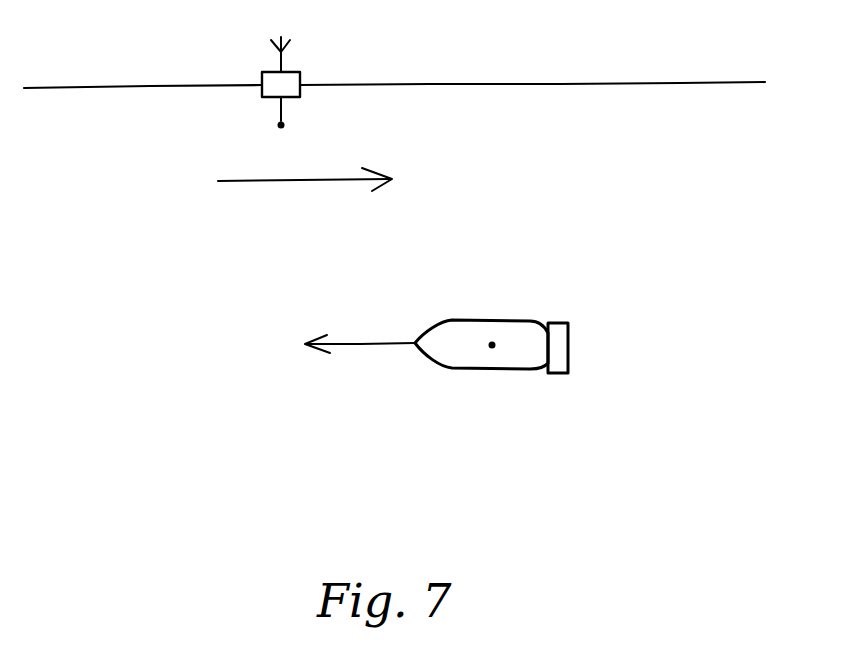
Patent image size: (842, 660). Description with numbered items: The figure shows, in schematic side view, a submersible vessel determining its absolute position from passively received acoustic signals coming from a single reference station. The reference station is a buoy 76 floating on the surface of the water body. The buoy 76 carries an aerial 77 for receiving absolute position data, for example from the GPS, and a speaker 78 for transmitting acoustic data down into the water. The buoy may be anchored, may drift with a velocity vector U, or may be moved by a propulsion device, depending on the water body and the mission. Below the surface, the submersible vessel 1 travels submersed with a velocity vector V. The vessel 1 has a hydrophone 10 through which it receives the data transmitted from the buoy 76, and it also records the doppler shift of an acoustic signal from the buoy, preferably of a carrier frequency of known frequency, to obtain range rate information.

The submersible vessel 1 is at (470, 318).
The hydrophone 10 is at (502, 345).
The buoy 76 is at (305, 72).
The aerial 77 is at (290, 44).
The speaker 78 is at (292, 126).
The velocity vector U is at (281, 182).
The velocity vector V is at (380, 344).